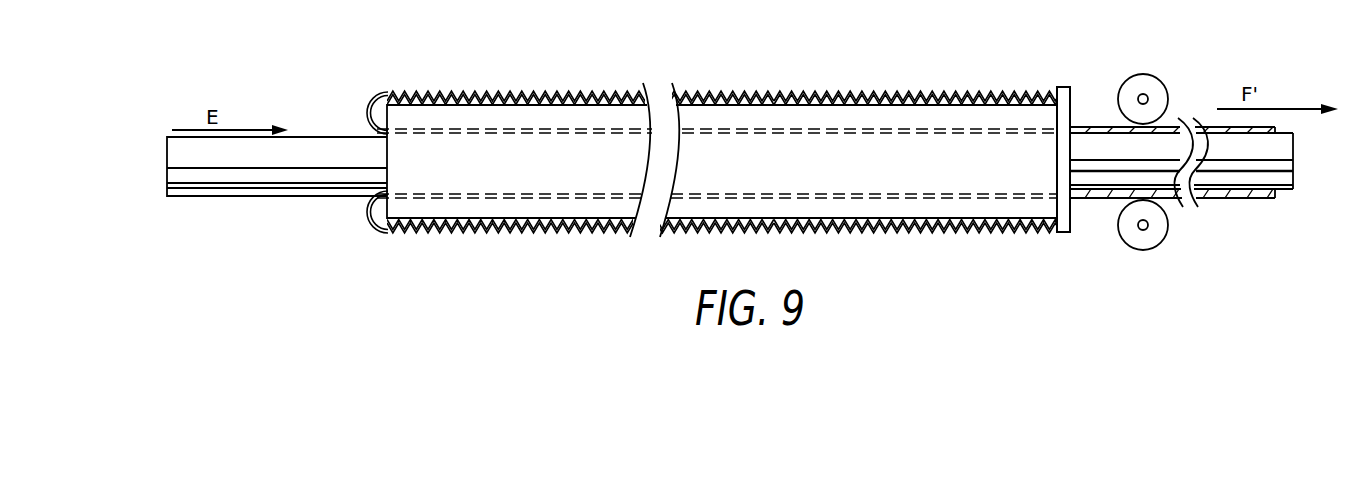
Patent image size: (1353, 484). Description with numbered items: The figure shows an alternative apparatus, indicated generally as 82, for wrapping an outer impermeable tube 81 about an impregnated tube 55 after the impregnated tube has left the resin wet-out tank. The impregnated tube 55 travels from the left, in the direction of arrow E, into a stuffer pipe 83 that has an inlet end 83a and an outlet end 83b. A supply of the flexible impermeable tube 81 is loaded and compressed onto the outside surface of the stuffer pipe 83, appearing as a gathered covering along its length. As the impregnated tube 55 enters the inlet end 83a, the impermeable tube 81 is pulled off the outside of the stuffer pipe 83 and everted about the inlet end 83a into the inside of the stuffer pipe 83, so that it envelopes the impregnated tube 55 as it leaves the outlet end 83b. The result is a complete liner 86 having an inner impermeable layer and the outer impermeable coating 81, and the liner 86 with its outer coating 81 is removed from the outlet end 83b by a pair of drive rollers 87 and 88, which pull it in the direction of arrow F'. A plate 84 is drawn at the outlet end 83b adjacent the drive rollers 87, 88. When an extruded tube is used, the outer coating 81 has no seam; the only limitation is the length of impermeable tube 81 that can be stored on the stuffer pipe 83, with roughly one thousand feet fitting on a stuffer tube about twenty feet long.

The impregnated tube 55 is at (197, 188).
The flexible impermeable tube 81 is at (490, 232).
The wrapping apparatus 82 is at (795, 62).
The stuffer pipe 83 is at (430, 208).
The inlet end of stuffer pipe 83a is at (367, 212).
The outlet end of stuffer pipe 83b is at (1077, 93).
The plate 84 is at (1062, 238).
The liner 86 is at (1088, 177).
The drive roller 87 is at (1167, 80).
The drive roller 88 is at (1157, 249).